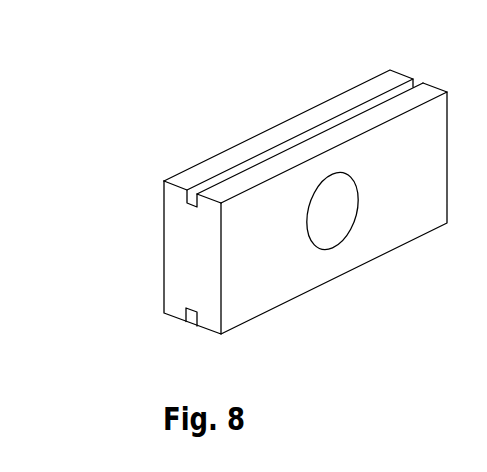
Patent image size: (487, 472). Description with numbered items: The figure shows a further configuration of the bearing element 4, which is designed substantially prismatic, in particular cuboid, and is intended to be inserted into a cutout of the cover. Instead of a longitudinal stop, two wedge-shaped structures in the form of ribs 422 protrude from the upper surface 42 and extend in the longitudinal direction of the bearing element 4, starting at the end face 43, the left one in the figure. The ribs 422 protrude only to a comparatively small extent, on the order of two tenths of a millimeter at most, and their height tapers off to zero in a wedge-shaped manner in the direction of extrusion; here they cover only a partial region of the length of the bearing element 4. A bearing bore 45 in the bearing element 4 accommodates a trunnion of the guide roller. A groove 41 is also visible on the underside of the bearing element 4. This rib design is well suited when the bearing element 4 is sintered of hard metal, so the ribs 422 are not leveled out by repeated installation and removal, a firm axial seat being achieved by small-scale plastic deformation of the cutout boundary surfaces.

The bearing element 4 is at (292, 95).
The bottom groove 41 is at (195, 325).
The upper surface 42 is at (360, 98).
The ribs 422 is at (221, 206).
The end face 43 is at (163, 247).
The bearing bore 45 is at (340, 220).